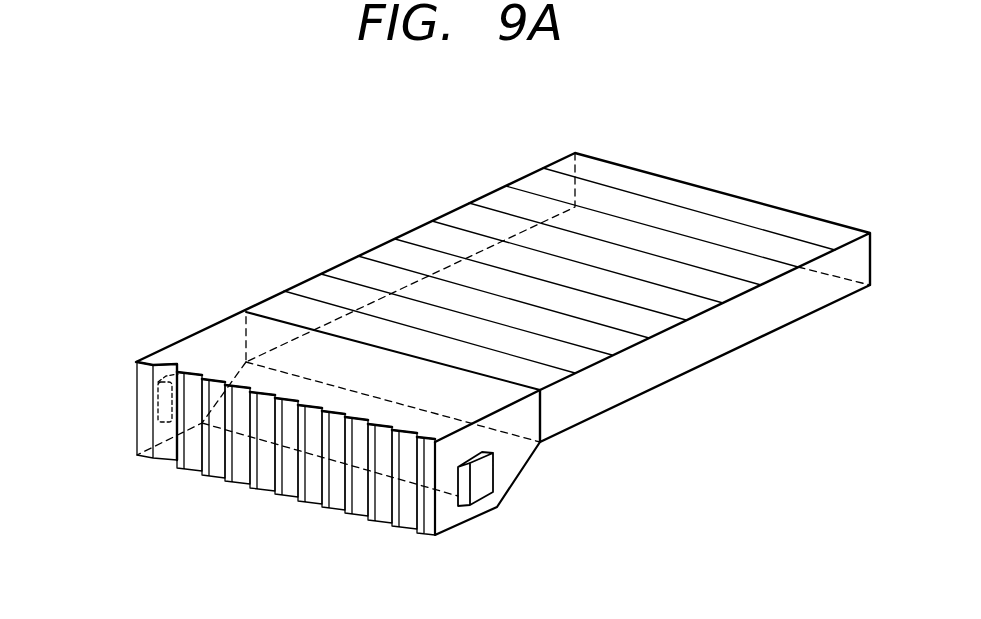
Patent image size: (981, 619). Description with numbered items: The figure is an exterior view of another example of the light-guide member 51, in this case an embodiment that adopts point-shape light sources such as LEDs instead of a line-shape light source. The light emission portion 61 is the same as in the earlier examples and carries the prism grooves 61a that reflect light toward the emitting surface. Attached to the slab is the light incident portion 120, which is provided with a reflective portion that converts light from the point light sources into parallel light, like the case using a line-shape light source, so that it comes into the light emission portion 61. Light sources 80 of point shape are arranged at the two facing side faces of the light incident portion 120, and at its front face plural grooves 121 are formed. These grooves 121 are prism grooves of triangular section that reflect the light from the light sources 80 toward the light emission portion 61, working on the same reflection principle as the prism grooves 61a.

The light-guide member 51 is at (768, 172).
The light emission portion 61 is at (753, 333).
The prism grooves 61a is at (312, 300).
The light sources 80 is at (483, 521).
The light incident portion 120 is at (330, 489).
The grooves 121 is at (247, 483).